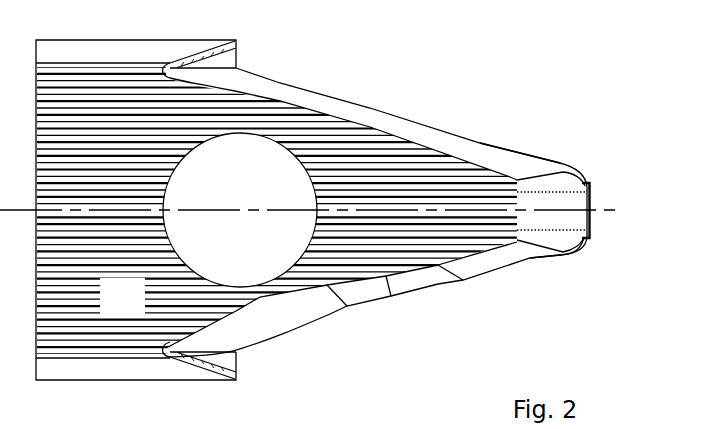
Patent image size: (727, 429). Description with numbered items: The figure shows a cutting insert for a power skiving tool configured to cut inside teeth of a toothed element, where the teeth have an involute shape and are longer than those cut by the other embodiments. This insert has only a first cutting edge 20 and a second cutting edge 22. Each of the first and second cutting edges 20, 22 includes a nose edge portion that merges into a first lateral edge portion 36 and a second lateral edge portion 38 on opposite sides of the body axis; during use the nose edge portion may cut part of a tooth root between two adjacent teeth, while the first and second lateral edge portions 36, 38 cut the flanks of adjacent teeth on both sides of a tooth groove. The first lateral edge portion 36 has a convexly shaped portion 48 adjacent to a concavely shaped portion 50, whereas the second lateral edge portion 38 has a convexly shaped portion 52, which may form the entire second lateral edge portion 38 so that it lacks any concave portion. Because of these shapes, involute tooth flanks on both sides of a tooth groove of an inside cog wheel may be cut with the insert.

The first cutting edge 20 is at (590, 222).
The second cutting edge 22 is at (560, 257).
The first lateral edge portion 36 is at (422, 292).
The second lateral edge portion 38 is at (437, 123).
The convexly shaped portion 48 is at (497, 276).
The concavely shaped portion 50 is at (326, 312).
The convexly shaped portion 52 is at (337, 97).